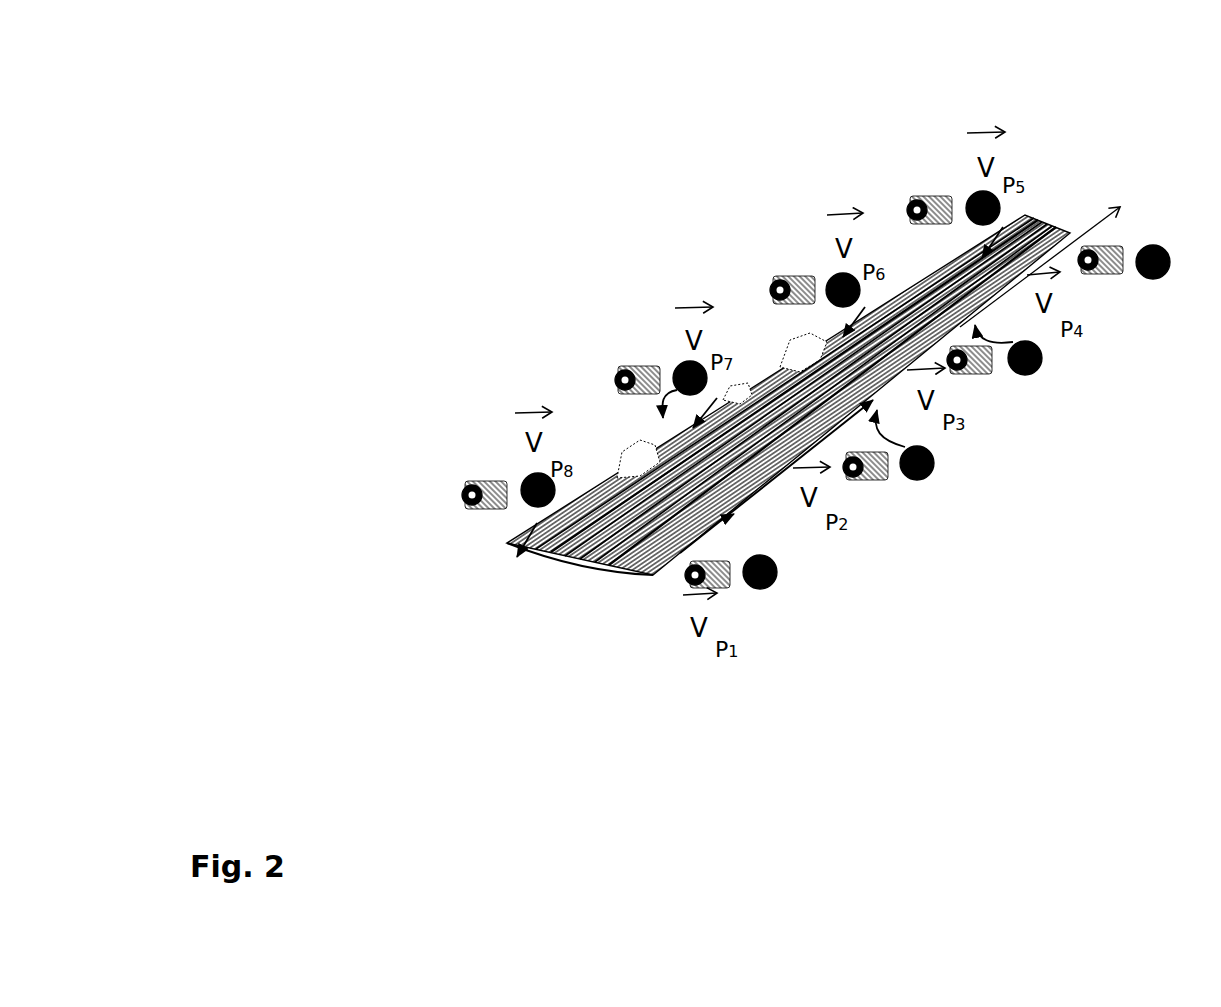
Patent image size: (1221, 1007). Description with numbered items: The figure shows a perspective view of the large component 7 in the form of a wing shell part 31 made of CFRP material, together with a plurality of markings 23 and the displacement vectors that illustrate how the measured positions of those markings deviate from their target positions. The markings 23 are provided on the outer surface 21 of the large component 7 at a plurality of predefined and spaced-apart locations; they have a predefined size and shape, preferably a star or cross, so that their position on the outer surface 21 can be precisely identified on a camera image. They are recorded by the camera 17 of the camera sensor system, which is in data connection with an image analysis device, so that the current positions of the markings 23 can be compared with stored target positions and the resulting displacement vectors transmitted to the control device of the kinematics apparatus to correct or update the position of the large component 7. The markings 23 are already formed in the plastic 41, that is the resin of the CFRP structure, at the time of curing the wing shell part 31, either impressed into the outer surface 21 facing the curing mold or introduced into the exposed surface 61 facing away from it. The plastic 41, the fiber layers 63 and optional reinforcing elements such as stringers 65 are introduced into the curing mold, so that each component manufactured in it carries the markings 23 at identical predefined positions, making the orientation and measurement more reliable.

The large component 7 is at (850, 303).
The wing shell part 31 is at (1082, 180).
The outer surface 21 is at (557, 567).
The exposed surface 61 is at (783, 410).
The stringers 65 is at (622, 525).
The plastic 41 is at (823, 483).
The fiber layers 63 is at (645, 538).
The camera 17 is at (986, 462).
The markings 23 is at (1107, 335).